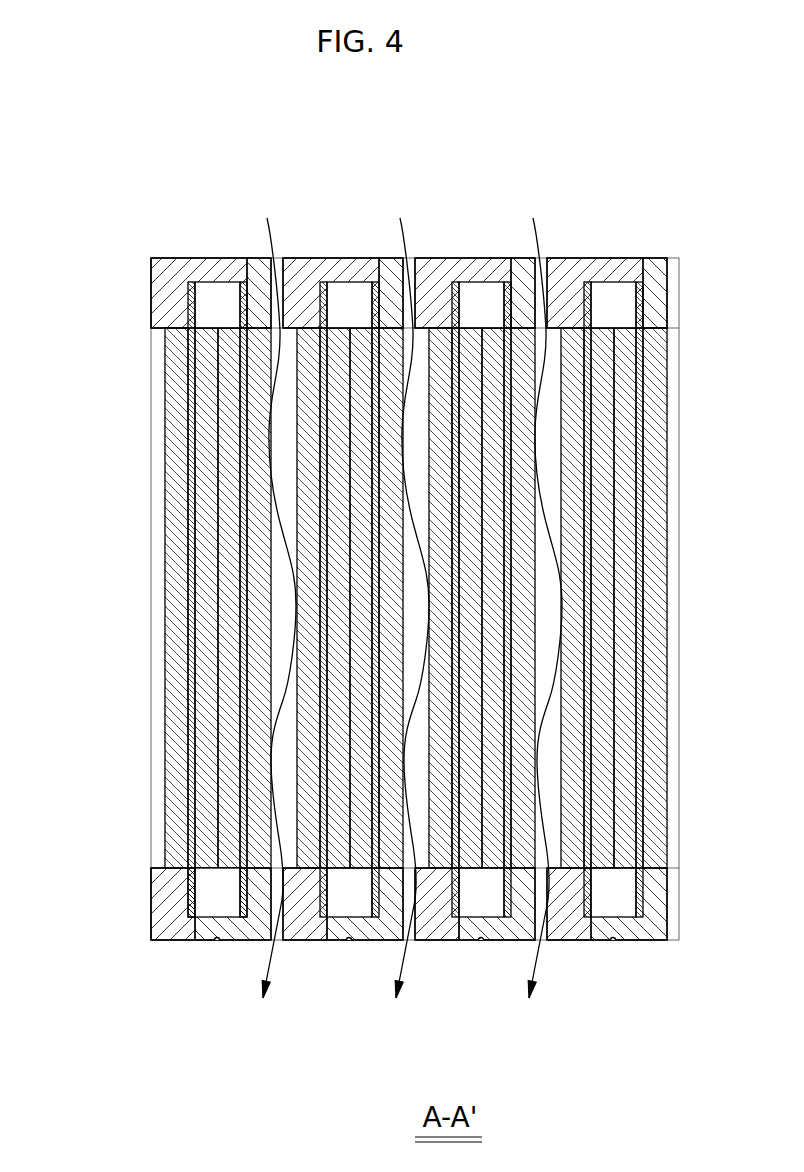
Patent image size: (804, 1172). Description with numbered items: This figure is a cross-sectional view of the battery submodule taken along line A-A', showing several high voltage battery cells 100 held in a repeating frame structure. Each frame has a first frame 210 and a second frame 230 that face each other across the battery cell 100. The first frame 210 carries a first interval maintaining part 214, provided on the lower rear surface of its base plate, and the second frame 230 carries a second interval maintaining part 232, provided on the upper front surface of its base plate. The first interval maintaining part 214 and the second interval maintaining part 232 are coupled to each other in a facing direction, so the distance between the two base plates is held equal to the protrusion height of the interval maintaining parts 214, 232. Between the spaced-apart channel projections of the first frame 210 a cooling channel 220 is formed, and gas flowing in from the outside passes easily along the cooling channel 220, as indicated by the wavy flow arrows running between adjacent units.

The high voltage battery cell 100 is at (165, 472).
The first frame 210 is at (173, 272).
The first interval maintaining part 214 is at (222, 272).
The cooling channel 220 is at (413, 258).
The second frame 230 is at (257, 278).
The second interval maintaining part 232 is at (200, 938).